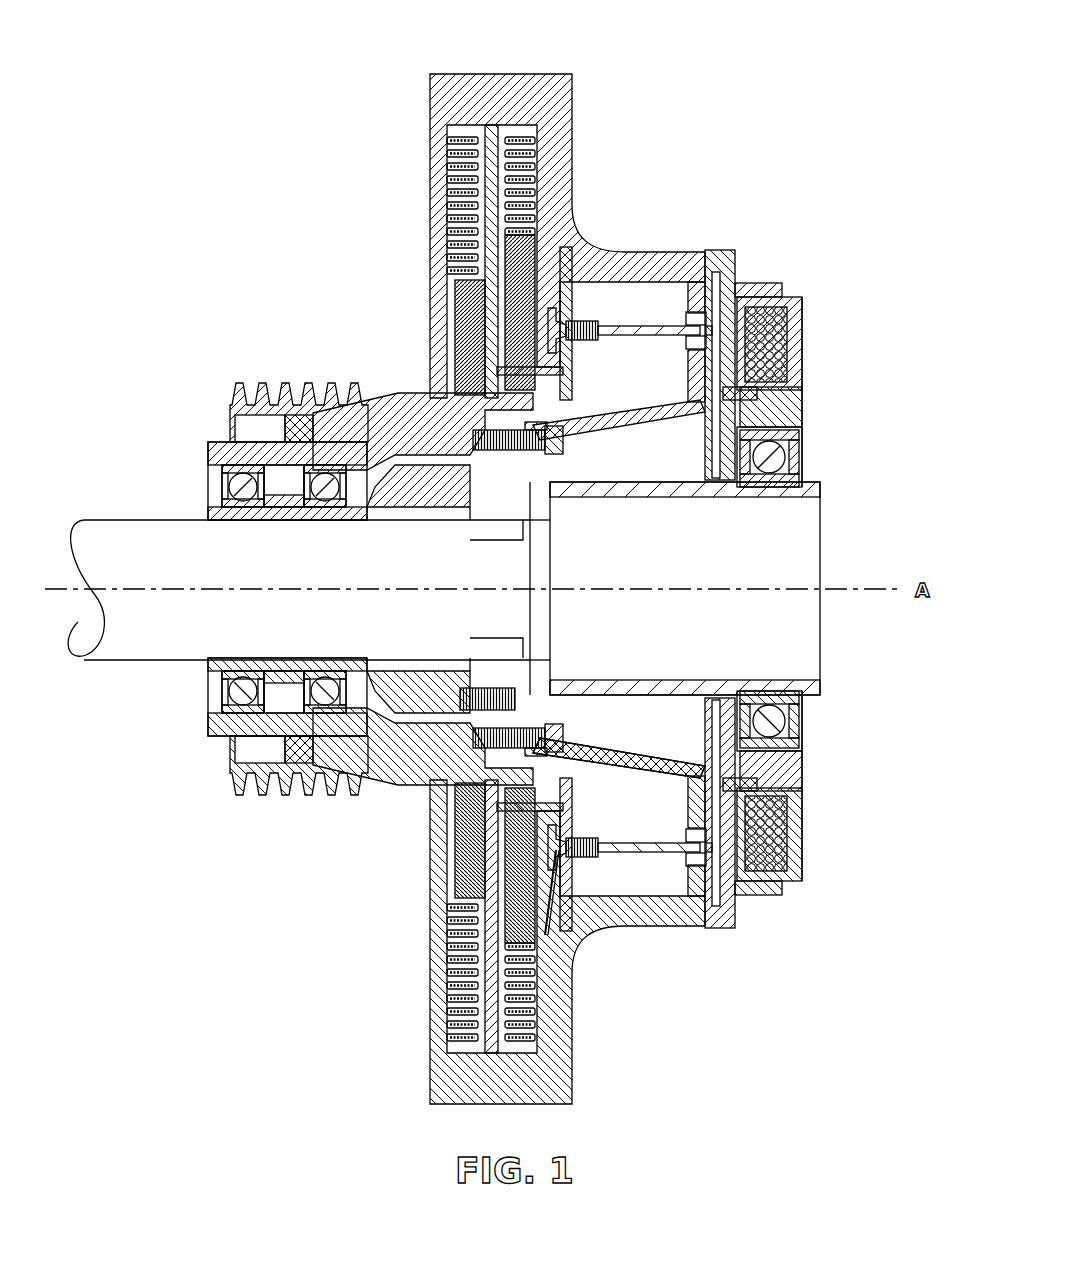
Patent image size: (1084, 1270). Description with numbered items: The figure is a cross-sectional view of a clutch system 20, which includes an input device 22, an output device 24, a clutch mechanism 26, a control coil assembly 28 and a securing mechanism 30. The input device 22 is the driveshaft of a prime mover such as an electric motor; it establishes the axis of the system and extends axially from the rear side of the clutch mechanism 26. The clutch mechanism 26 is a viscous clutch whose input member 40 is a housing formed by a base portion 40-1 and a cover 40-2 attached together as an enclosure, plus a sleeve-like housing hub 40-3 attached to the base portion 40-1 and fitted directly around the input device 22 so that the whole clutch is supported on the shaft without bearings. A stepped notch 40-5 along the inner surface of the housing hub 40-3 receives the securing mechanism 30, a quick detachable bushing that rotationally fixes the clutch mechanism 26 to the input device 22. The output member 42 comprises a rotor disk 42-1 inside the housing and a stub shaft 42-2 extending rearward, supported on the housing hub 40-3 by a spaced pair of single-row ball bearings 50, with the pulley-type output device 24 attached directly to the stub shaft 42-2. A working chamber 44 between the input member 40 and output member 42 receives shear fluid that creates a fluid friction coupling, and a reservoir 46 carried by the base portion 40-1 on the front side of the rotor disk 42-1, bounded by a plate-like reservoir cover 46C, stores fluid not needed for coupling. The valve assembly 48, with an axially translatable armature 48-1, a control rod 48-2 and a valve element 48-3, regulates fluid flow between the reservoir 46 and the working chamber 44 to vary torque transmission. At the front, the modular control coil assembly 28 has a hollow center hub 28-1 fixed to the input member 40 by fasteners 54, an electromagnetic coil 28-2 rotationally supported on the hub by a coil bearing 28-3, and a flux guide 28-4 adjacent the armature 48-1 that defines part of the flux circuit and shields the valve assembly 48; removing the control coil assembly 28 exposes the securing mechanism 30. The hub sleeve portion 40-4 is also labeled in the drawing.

The clutch system 20 is at (254, 155).
The input device 22 is at (138, 600).
The output device 24 is at (237, 398).
The clutch mechanism 26 is at (506, 66).
The control coil assembly 28 is at (808, 545).
The center hub 28-1 is at (790, 680).
The electromagnetic coil 28-2 is at (800, 352).
The coil bearing 28-3 is at (780, 705).
The flux guide 28-4 is at (733, 250).
The securing mechanism 30 is at (485, 468).
The input member 40 is at (545, 1095).
The base portion 40-1 is at (548, 1015).
The cover 40-2 is at (440, 988).
The housing hub 40-3 is at (430, 690).
The hub sleeve 40-4 is at (260, 522).
The stepped notch 40-5 is at (505, 430).
The output member 42 is at (455, 843).
The rotor disk 42-1 is at (475, 868).
The stub shaft 42-2 is at (240, 450).
The working chamber 44 is at (455, 148).
The reservoir 46 is at (625, 880).
The reservoir cover 46C is at (640, 895).
The valve assembly 48 is at (668, 836).
The armature 48-1 is at (790, 840).
The control rod 48-2 is at (640, 860).
The valve element 48-3 is at (575, 890).
The bearings 50 is at (290, 715).
The fasteners 54 is at (630, 746).